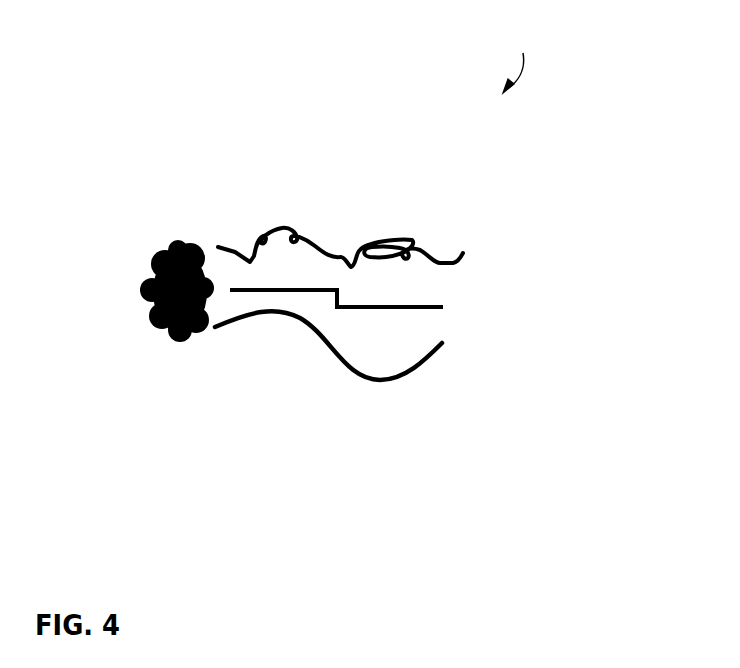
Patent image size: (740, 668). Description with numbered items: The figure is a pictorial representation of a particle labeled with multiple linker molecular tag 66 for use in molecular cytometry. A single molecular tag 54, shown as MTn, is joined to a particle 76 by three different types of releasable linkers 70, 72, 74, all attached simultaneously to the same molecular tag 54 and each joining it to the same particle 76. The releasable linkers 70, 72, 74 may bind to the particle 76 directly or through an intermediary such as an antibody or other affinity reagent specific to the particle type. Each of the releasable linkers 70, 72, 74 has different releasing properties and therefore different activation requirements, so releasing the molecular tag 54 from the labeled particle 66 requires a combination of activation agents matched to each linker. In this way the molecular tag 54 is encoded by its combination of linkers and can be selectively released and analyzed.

The particle labeled with multiple linker molecular tag 66 is at (516, 56).
The releasable linker 70 is at (412, 240).
The releasable linker 72 is at (428, 307).
The releasable linker 74 is at (337, 358).
The particle 76 is at (147, 317).
The molecular tag 54 is at (568, 283).